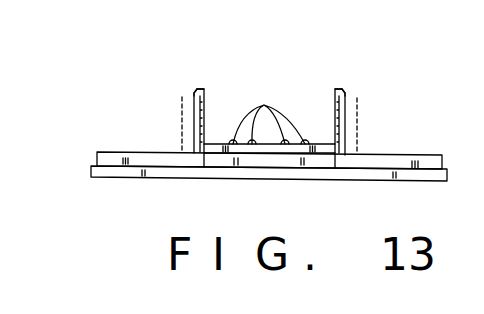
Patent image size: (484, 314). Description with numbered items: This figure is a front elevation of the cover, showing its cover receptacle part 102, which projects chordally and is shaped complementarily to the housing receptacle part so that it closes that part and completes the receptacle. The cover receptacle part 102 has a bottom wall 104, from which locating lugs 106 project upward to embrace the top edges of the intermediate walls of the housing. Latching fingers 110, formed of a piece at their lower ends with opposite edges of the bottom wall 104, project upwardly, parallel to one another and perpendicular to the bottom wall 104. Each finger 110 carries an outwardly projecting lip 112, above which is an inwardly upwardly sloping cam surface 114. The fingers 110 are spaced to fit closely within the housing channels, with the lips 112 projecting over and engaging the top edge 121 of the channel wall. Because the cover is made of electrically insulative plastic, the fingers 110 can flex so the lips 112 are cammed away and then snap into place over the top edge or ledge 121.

The cover receptacle part 102 is at (219, 128).
The bottom wall 104 is at (275, 157).
The locating lugs 106 is at (266, 102).
The latching fingers 110 is at (193, 122).
The outwardly projecting lip 112 is at (183, 90).
The cam surface 114 is at (202, 79).
The top edge 121 is at (181, 96).